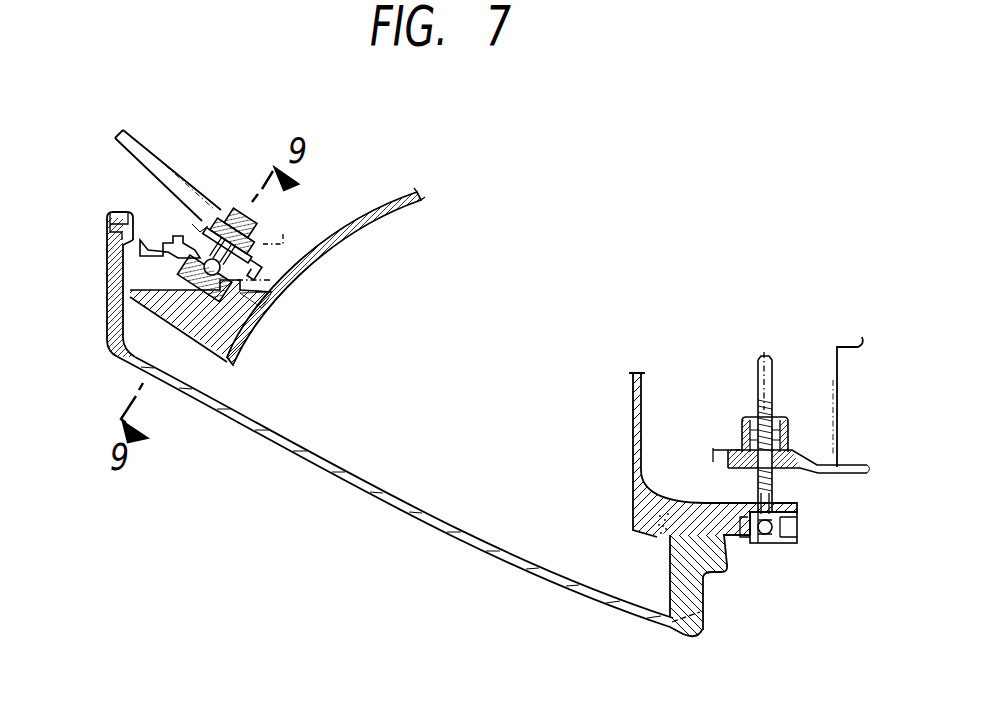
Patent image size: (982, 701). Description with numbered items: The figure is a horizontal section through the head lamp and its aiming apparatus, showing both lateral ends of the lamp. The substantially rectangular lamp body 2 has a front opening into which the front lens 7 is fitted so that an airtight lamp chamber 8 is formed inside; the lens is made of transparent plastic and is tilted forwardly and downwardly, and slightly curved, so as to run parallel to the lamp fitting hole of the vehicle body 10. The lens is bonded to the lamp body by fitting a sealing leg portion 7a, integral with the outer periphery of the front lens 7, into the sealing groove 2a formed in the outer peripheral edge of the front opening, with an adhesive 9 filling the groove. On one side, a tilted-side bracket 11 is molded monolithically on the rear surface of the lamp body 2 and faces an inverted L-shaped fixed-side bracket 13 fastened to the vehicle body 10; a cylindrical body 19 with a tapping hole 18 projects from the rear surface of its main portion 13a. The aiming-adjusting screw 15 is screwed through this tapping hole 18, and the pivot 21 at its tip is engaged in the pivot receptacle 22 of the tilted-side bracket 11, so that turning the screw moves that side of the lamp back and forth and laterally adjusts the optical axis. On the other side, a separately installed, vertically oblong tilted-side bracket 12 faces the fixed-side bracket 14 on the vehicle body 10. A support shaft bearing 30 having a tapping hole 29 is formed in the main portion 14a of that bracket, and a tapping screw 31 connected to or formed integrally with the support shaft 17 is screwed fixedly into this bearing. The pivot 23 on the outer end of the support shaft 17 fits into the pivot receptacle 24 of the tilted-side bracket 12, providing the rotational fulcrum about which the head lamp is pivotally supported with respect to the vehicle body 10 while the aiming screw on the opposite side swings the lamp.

The lamp body 2 is at (380, 200).
The sealing groove 2a is at (650, 533).
The front lens 7 is at (287, 453).
The sealing leg portion 7a is at (680, 543).
The lamp chamber 8 is at (397, 483).
The adhesive 9 is at (667, 540).
The vehicle body 10 is at (140, 132).
The tilted-side bracket 11 is at (787, 543).
The tilted-side bracket 12 is at (203, 261).
The fixed-side bracket 13 is at (815, 425).
The main portion 13a is at (803, 470).
The fixed-side bracket 14 is at (185, 231).
The main portion 14a is at (217, 220).
The aiming-adjusting screw 15 is at (743, 423).
The support shaft 17 is at (247, 277).
The tapping hole 18 is at (773, 405).
The cylindrical body 19 is at (743, 430).
The pivot 21 is at (800, 527).
The pivot receptacle 22 is at (752, 525).
The pivot 23 is at (247, 320).
The pivot receptacle 24 is at (197, 265).
The tapping hole 29 is at (212, 205).
The support shaft bearing 30 is at (258, 215).
The tapping screw 31 is at (236, 200).